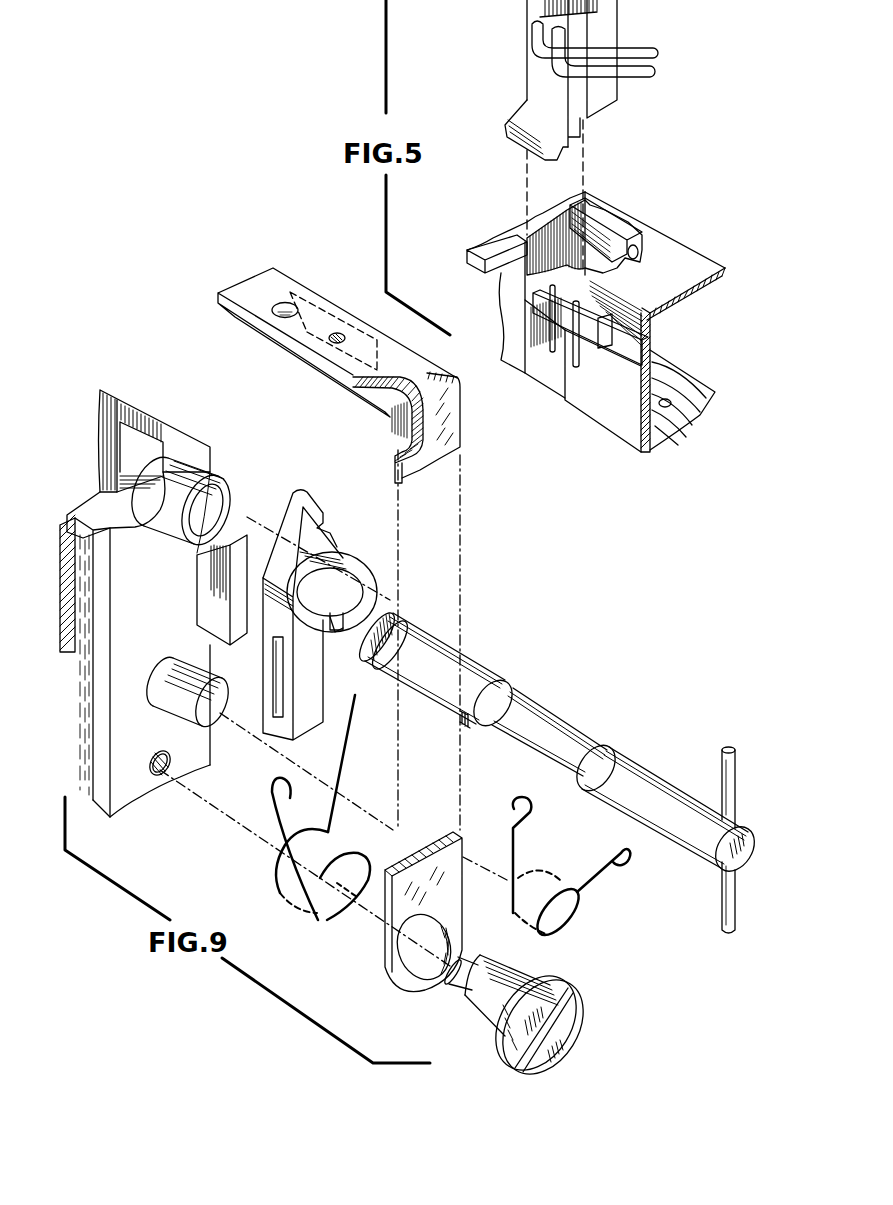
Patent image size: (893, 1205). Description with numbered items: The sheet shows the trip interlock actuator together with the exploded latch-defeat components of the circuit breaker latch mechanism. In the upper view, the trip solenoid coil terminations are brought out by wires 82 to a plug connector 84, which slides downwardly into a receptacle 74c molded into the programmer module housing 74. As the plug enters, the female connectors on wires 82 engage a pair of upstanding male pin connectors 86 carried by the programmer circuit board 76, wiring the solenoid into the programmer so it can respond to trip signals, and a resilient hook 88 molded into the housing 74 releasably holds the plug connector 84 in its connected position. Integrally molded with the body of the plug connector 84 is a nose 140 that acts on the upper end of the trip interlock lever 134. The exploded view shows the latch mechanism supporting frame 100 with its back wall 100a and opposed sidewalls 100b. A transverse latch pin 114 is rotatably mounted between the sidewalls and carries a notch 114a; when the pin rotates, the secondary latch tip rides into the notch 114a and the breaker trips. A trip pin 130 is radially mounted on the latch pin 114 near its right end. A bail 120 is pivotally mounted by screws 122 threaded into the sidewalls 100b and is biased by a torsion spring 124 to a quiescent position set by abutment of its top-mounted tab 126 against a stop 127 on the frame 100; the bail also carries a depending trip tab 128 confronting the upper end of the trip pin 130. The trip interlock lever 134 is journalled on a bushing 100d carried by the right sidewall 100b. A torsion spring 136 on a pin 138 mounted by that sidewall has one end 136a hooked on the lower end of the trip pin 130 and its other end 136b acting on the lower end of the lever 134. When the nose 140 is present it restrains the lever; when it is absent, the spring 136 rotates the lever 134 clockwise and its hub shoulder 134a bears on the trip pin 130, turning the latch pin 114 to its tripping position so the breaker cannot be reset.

In FIG. 5, the programmer module housing 74 is at (688, 258).
In FIG. 5, the receptacle 74c is at (547, 225).
In FIG. 5, the programmer circuit board 76 is at (700, 385).
In FIG. 5, the wires 82 is at (633, 62).
In FIG. 5, the plug connector 84 is at (530, 70).
In FIG. 5, the male pin connectors 86 is at (556, 368).
In FIG. 5, the resilient hook 88 is at (600, 235).
In FIG. 5, the nose 140 is at (515, 140).
In FIG. 9, the supporting frame 100 is at (88, 668).
In FIG. 9, the back wall 100a is at (104, 398).
In FIG. 9, the sidewalls 100b is at (135, 795).
In FIG. 9, the bushing 100d is at (215, 484).
In FIG. 9, the stop 127 is at (128, 455).
In FIG. 9, the tab 126 is at (310, 345).
In FIG. 9, the trip tab 128 is at (398, 430).
In FIG. 9, the bail 120 is at (462, 438).
In FIG. 9, the trip interlock lever 134 is at (318, 515).
In FIG. 9, the hub shoulder 134a is at (336, 633).
In FIG. 9, the pin 138 is at (218, 708).
In FIG. 9, the latch pin 114 is at (632, 757).
In FIG. 9, the notch 114a is at (470, 724).
In FIG. 9, the trip pin 130 is at (720, 775).
In FIG. 9, the torsion spring 136 is at (556, 880).
In FIG. 9, the spring end 136a is at (632, 865).
In FIG. 9, the spring end 136b is at (530, 812).
In FIG. 9, the torsion spring 124 is at (330, 922).
In FIG. 9, the screws 122 is at (580, 1015).